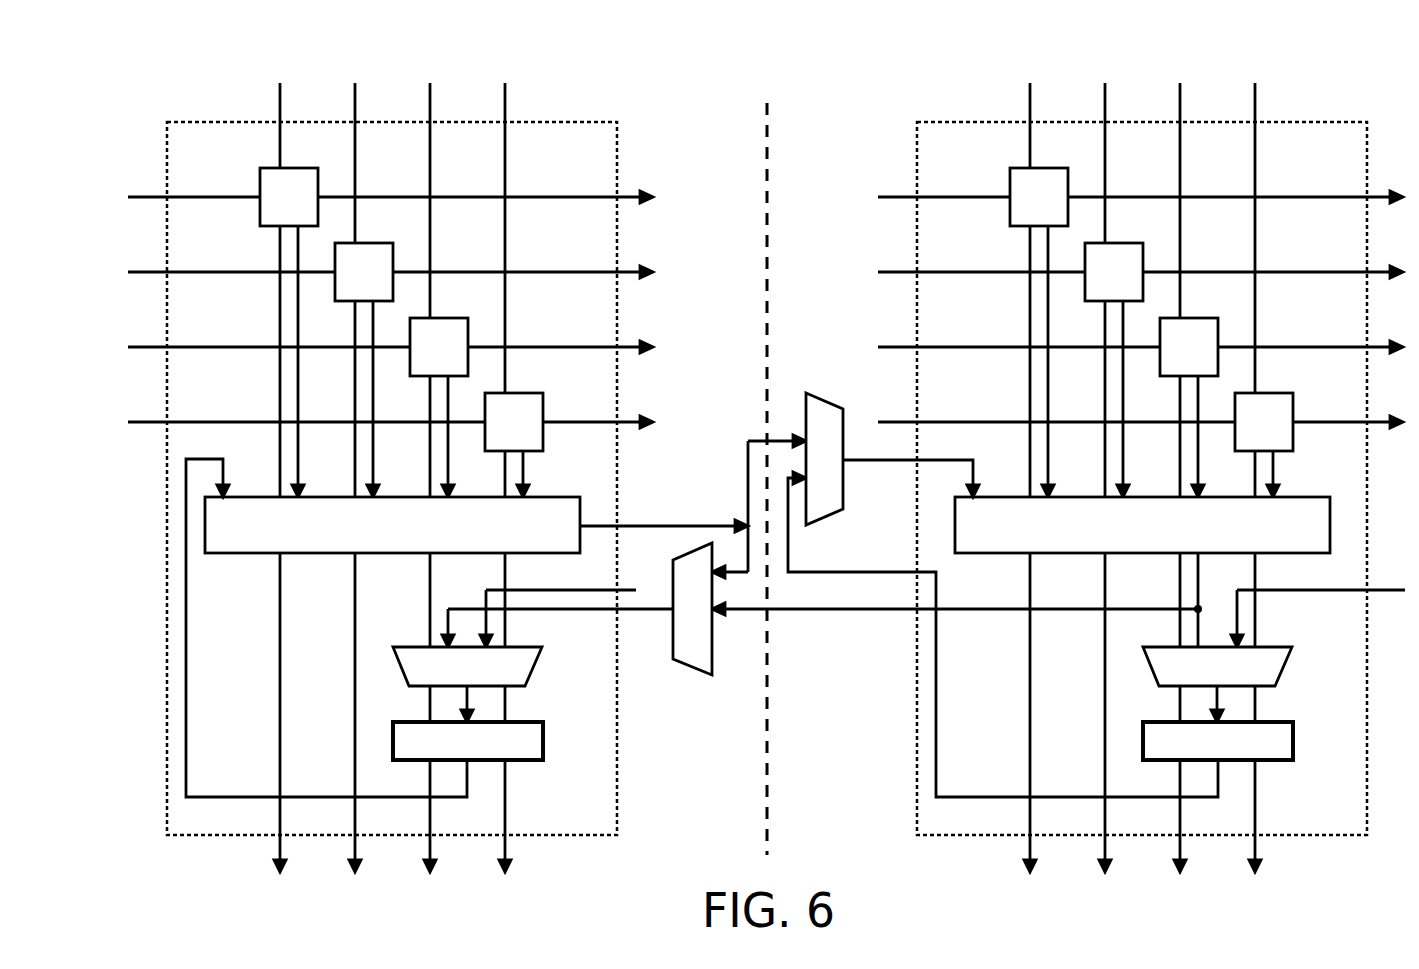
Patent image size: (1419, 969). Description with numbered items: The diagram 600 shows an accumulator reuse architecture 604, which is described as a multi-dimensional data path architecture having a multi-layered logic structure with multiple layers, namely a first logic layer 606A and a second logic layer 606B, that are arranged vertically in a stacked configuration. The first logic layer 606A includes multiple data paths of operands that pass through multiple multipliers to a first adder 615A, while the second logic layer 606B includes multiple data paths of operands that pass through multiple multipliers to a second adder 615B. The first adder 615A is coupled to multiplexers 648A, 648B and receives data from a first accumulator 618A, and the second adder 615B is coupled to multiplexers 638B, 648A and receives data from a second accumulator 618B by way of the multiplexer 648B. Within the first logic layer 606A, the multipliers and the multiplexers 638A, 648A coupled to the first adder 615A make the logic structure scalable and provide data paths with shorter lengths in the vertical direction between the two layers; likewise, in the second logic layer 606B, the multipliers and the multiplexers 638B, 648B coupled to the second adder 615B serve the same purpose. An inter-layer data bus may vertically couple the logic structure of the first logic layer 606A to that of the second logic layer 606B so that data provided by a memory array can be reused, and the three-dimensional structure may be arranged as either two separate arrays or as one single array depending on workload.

The diagram 600 is at (260, 38).
The accumulator reuse architecture 604 is at (937, 46).
The first logic layer 606A is at (668, 145).
The second logic layer 606B is at (818, 145).
The first adder 615A is at (457, 536).
The second adder 615B is at (1207, 536).
The first accumulator 618A is at (515, 751).
The second accumulator 618B is at (1265, 751).
The multiplexer 638A is at (515, 678).
The multiplexer 638B is at (1265, 678).
The multiplexer 648A is at (692, 609).
The multiplexer 648B is at (824, 459).